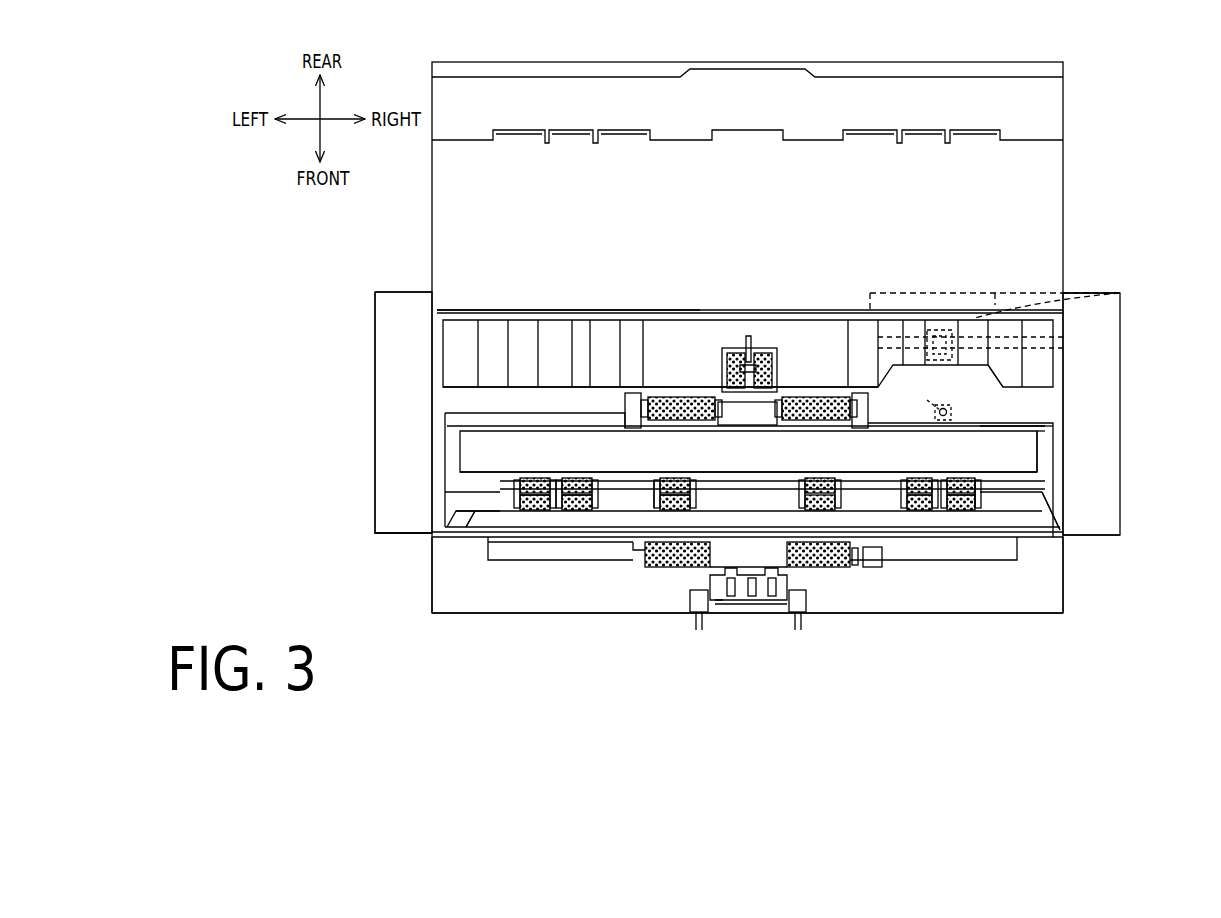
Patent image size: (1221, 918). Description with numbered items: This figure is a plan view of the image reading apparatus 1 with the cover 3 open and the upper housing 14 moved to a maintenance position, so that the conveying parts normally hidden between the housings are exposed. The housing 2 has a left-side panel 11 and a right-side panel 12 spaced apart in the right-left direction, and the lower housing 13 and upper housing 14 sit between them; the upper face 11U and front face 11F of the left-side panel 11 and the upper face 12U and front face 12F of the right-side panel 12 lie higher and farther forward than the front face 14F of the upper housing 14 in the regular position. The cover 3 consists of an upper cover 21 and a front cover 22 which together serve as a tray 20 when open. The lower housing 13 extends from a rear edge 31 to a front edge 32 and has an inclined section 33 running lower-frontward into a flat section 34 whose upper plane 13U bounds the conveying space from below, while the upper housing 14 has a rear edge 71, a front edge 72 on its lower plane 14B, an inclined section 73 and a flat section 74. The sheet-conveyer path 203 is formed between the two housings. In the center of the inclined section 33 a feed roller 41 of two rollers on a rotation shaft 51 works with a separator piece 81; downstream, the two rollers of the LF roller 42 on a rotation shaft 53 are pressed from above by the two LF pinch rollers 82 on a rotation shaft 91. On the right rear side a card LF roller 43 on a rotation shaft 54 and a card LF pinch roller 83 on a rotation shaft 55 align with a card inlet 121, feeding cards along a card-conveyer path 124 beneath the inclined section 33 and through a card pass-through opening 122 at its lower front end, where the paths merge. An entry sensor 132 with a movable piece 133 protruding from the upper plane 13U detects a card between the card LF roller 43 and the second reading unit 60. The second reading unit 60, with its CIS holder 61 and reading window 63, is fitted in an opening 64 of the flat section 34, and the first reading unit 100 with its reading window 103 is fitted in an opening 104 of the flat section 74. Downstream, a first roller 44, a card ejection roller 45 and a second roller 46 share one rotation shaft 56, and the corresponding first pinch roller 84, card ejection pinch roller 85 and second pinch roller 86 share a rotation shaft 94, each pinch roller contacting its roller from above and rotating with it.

The image reading apparatus 1 is at (721, 708).
The housing 2 is at (408, 277).
The cover 3 is at (846, 50).
The left-side panel 11 is at (375, 446).
The upper face 11U is at (383, 372).
The front face 11F is at (393, 538).
The right-side panel 12 is at (1120, 390).
The upper face 12U is at (1120, 352).
The right side frame front portion 12F is at (1100, 537).
The lower housing 13 is at (413, 322).
The upper plane 13U is at (555, 395).
The upper housing 14 is at (432, 623).
The lower plane 14B is at (450, 580).
The front face 14F is at (545, 614).
The tray 20 is at (1137, 107).
The upper cover 21 is at (1063, 203).
The front cover 22 is at (1063, 117).
The rear edge 31 is at (500, 314).
The front edge 32 is at (505, 500).
The inclined section 33 is at (437, 372).
The flat section 34 is at (437, 438).
The feed roller 41 is at (765, 355).
The LF roller 42 is at (677, 398).
The card LF roller 43 is at (1084, 291).
The first roller 44 is at (677, 480).
The card ejection roller 45 is at (955, 478).
The second roller 46 is at (575, 497).
The rotation shaft 51 is at (748, 372).
The rotation shaft 53 is at (638, 393).
The rotation shaft 54 is at (980, 368).
The rotation shaft 55 is at (952, 360).
The rotation shaft 56 is at (653, 494).
The second reading unit 60 is at (445, 458).
The CIS holder 61 is at (1047, 449).
The reading window 63 is at (1040, 456).
The opening 64 is at (1025, 460).
The rear edge 71 is at (1043, 614).
The front edge 72 is at (458, 492).
The inclined section 73 is at (648, 608).
The flat section 74 is at (460, 512).
The separator piece 81 is at (745, 601).
The LF pinch roller 82 is at (690, 607).
The card LF pinch roller 83 is at (1120, 293).
The first pinch roller 84 is at (672, 563).
The card ejection pinch roller 85 is at (948, 505).
The second pinch roller 86 is at (578, 512).
The rotation shaft 91 is at (725, 610).
The rotation shaft 94 is at (658, 496).
The first reading unit 100 is at (1060, 511).
The reading window 103 is at (477, 498).
The opening 104 is at (482, 512).
The card inlet 121 is at (946, 293).
The card pass-through opening 122 is at (990, 378).
The card-conveyer path 124 is at (1005, 441).
The entry sensor 132 is at (952, 416).
The movable piece 133 is at (937, 406).
The sheet-conveyer path 203 is at (583, 440).